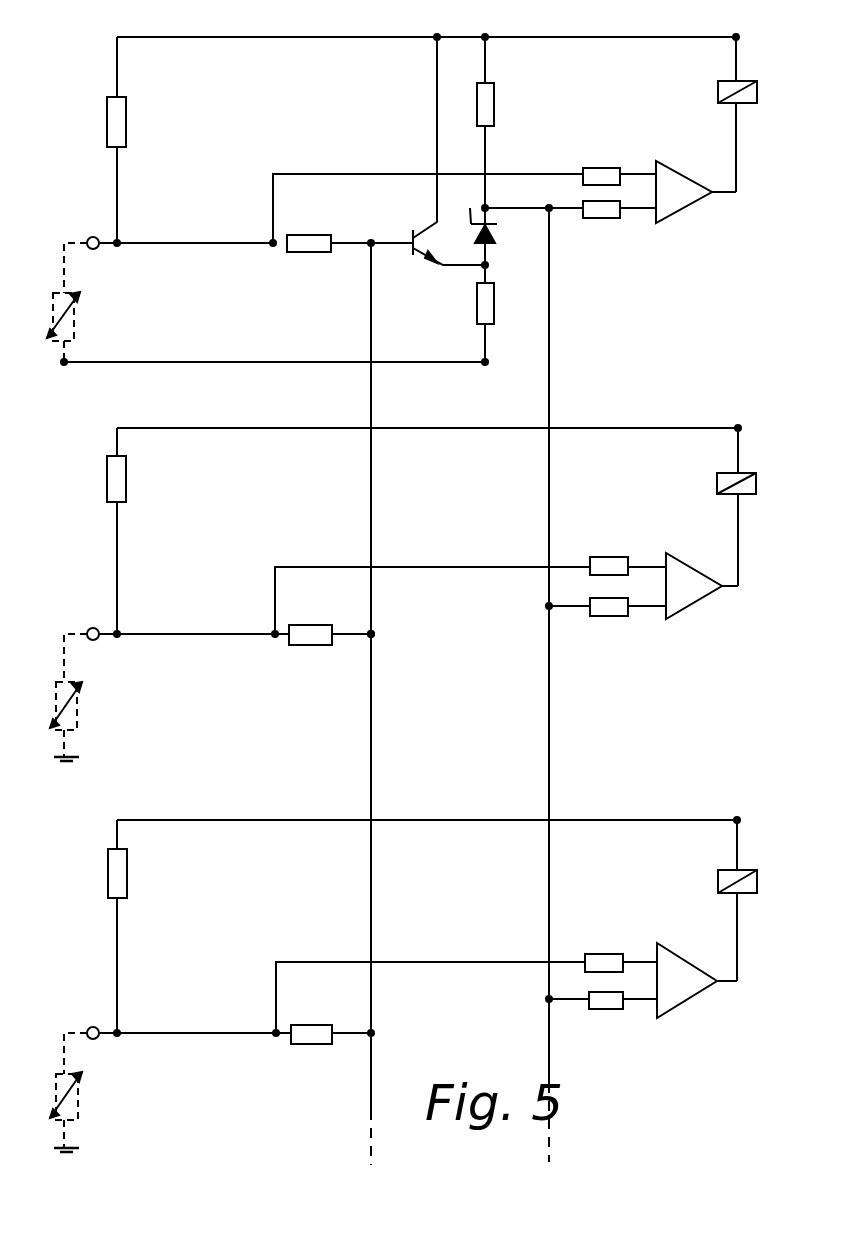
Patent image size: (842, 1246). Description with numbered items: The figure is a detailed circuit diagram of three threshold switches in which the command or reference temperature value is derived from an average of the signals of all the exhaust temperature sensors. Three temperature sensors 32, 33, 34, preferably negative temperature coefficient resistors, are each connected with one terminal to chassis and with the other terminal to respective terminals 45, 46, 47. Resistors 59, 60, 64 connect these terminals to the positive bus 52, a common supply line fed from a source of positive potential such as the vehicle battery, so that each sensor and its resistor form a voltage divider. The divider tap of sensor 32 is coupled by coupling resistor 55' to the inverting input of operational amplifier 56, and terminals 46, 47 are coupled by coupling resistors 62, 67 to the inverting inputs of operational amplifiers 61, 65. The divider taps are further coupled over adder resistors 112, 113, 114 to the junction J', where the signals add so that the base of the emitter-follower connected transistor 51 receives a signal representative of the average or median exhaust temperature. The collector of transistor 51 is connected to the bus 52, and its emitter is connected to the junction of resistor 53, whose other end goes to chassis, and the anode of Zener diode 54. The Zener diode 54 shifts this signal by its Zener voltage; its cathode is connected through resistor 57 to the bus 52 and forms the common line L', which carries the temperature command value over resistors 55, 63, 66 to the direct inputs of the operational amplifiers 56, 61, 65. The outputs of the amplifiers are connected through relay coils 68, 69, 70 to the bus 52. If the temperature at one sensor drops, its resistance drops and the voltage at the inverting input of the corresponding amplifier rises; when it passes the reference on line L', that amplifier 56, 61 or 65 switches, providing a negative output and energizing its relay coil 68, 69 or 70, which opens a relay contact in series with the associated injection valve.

The positive bus 52 is at (200, 37).
The resistor 59 is at (120, 122).
The terminal 45 is at (91, 237).
The temperature sensor 32 is at (75, 321).
The adder resistor 112 is at (313, 245).
The transistor 51 is at (433, 262).
The resistor 57 is at (490, 117).
The Zener diode 54 is at (497, 243).
The resistor 53 is at (490, 312).
The coupling resistor 55' is at (464, 174).
The resistor 55 is at (607, 238).
The operational amplifier 56 is at (680, 198).
The relay coil 68 is at (722, 88).
The resistor 60 is at (120, 490).
The terminal 46 is at (90, 628).
The temperature sensor 33 is at (78, 711).
The adder resistor 113 is at (313, 645).
The junction J' is at (390, 624).
The line L' is at (532, 601).
The coupling resistor 62 is at (608, 560).
The resistor 63 is at (615, 616).
The operational amplifier 61 is at (690, 593).
The relay coil 69 is at (725, 480).
The resistor 64 is at (140, 926).
The terminal 47 is at (90, 1027).
The temperature sensor 34 is at (78, 1103).
The adder resistor 114 is at (313, 1044).
The coupling resistor 67 is at (606, 958).
The resistor 66 is at (610, 1009).
The operational amplifier 65 is at (692, 982).
The relay coil 70 is at (725, 882).